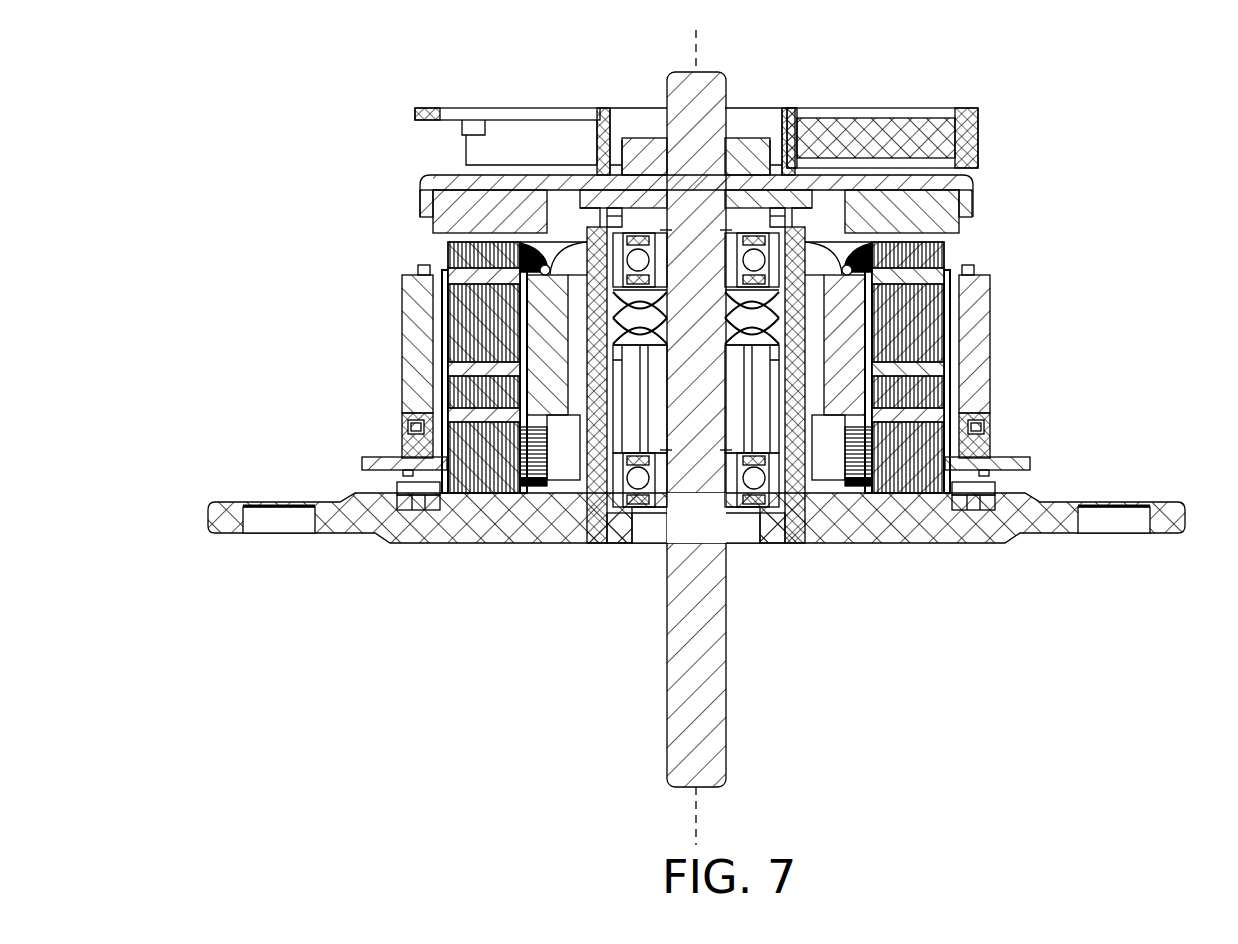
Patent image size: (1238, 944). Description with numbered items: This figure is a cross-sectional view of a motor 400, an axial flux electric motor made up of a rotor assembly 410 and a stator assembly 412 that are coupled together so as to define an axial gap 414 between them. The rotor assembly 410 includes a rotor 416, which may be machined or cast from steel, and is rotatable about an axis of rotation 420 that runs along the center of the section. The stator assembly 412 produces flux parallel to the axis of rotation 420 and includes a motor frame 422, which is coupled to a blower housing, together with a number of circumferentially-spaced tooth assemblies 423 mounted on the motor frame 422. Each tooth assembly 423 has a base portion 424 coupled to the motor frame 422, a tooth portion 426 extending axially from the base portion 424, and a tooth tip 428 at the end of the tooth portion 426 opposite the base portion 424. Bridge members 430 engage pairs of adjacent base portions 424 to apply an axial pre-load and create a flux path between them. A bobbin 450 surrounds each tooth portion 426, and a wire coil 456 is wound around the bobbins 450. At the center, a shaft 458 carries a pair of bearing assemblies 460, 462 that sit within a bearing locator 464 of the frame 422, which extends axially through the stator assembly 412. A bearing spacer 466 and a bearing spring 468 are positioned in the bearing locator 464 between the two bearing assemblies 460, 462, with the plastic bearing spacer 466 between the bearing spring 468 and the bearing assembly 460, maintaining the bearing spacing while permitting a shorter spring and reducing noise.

The motor 400 is at (204, 105).
The rotor assembly 410 is at (400, 178).
The stator assembly 412 is at (360, 287).
The axial gap 414 is at (968, 240).
The rotor 416 is at (976, 183).
The axis of rotation 420 is at (698, 52).
The motor frame 422 is at (1050, 527).
The tooth assembly 423 is at (915, 508).
The base portion 424 is at (913, 441).
The tooth portion 426 is at (913, 337).
The tooth tip 428 is at (925, 253).
The bridge member 430 is at (860, 462).
The bobbin 450 is at (948, 416).
The wire coil 456 is at (975, 360).
The shaft 458 is at (722, 740).
The bearing assembly 460 is at (765, 510).
The bearing assembly 462 is at (605, 225).
The bearing locator 464 is at (617, 393).
The bearing spacer 466 is at (598, 405).
The bearing spring 468 is at (783, 325).